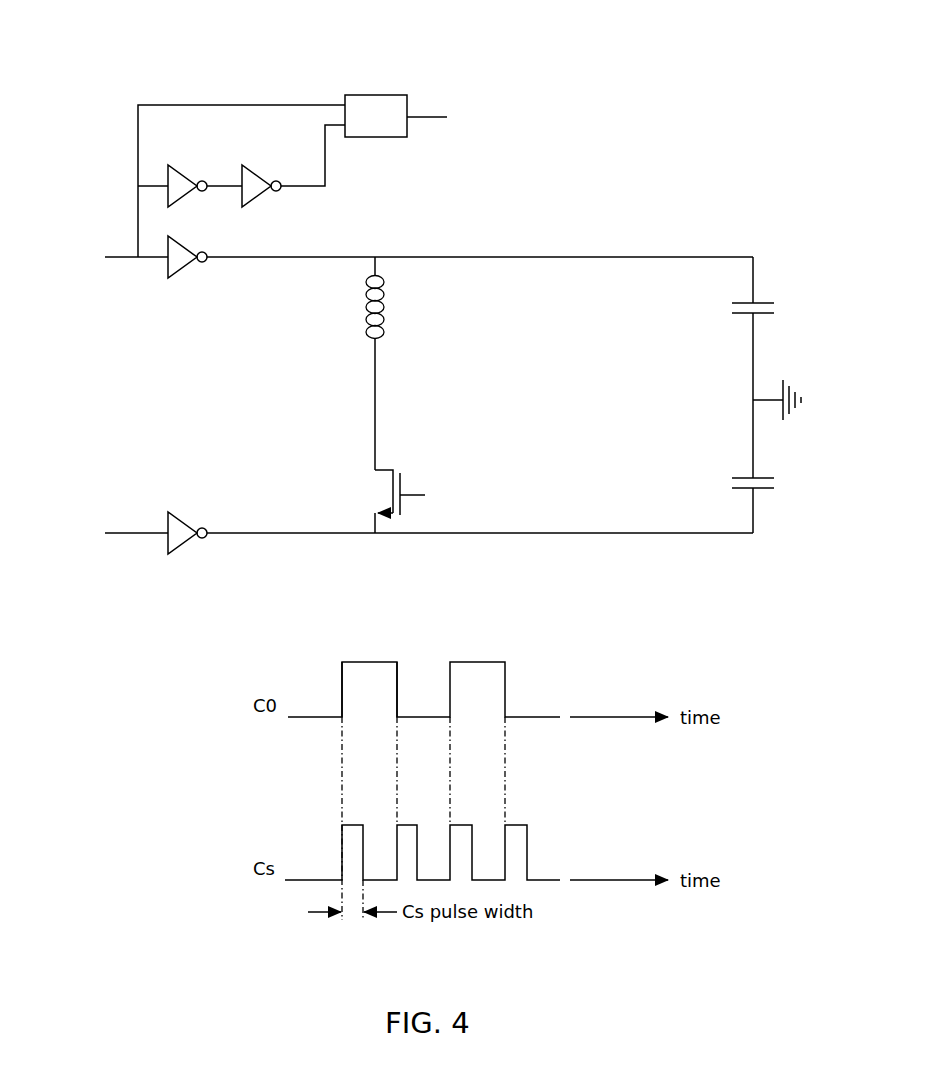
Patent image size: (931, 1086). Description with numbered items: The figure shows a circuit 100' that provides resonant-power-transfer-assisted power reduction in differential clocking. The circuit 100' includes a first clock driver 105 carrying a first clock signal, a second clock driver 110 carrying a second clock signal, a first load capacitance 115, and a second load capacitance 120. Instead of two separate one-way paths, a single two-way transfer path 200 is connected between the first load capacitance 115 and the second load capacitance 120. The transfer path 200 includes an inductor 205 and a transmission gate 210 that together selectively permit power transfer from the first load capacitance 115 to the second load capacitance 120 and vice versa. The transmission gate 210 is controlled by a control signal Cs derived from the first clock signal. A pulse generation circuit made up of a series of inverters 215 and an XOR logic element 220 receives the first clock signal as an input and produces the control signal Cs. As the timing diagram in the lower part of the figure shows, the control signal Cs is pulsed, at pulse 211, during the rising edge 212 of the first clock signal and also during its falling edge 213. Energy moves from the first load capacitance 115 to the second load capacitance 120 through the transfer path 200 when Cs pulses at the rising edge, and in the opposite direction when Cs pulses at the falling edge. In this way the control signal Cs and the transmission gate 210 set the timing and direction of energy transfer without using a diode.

The circuit 100' is at (438, 284).
The first clock driver 105 is at (187, 272).
The second clock driver 110 is at (183, 513).
The first load capacitance 115 is at (772, 295).
The second load capacitance 120 is at (765, 492).
The two-way transfer path 200 is at (445, 367).
The inductor 205 is at (393, 316).
The transmission gate 210 is at (355, 473).
The pulse 211 is at (384, 822).
The rising edge 212 is at (338, 673).
The falling edge 213 is at (400, 672).
The series of inverters 215 is at (185, 175).
The XOR logic element 220 is at (360, 92).